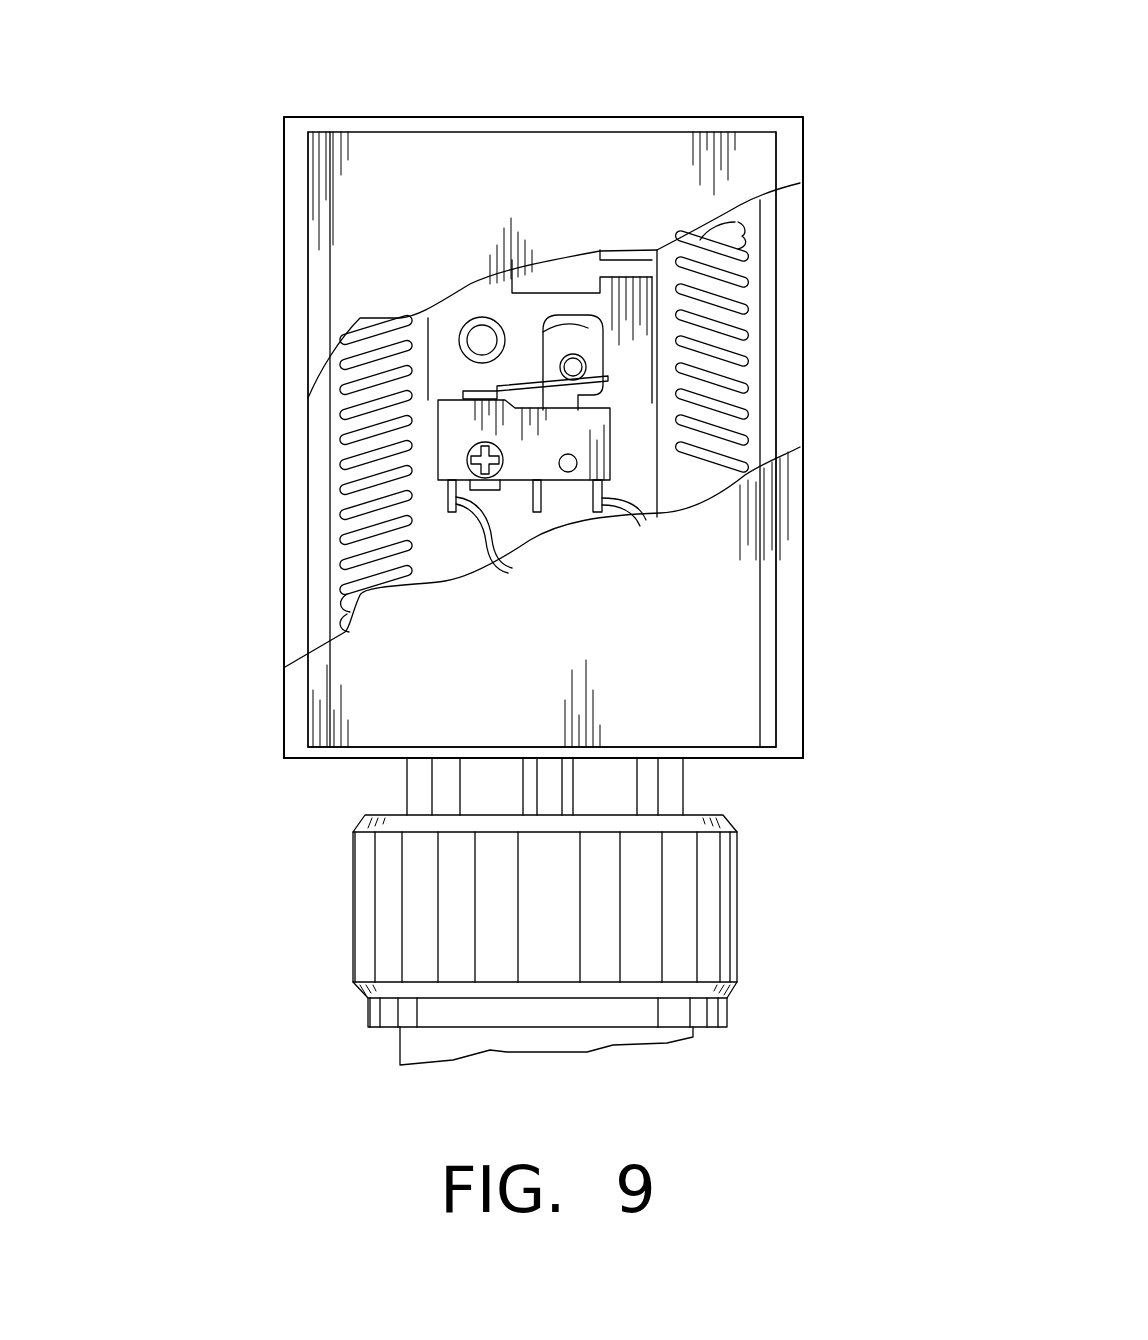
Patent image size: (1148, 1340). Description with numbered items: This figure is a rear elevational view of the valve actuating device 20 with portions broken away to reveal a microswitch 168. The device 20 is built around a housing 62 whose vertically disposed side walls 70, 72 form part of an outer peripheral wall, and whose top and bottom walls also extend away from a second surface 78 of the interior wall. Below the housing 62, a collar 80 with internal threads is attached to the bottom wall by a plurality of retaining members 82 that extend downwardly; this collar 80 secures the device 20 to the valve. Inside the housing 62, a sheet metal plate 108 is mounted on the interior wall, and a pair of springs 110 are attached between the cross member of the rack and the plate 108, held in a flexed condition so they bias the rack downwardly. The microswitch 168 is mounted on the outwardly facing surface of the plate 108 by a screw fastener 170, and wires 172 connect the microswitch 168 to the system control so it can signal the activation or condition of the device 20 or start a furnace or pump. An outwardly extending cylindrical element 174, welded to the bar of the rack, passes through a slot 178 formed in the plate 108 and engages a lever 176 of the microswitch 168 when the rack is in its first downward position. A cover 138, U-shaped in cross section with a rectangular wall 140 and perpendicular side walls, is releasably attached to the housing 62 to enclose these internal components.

The valve actuating device 20 is at (185, 675).
The housing 62 is at (822, 107).
The side wall 70 is at (300, 548).
The side wall 72 is at (793, 442).
The second surface 78 is at (748, 233).
The collar 80 is at (722, 892).
The retaining members 82 is at (420, 782).
The plate 108 is at (640, 277).
The springs 110 is at (740, 314).
The cover 138 is at (790, 684).
The rectangular wall 140 is at (325, 715).
The microswitch 168 is at (573, 508).
The screw fastener 170 is at (485, 456).
The wires 172 is at (492, 560).
The cylindrical element 174 is at (564, 360).
The lever 176 is at (735, 403).
The slot 178 is at (548, 355).